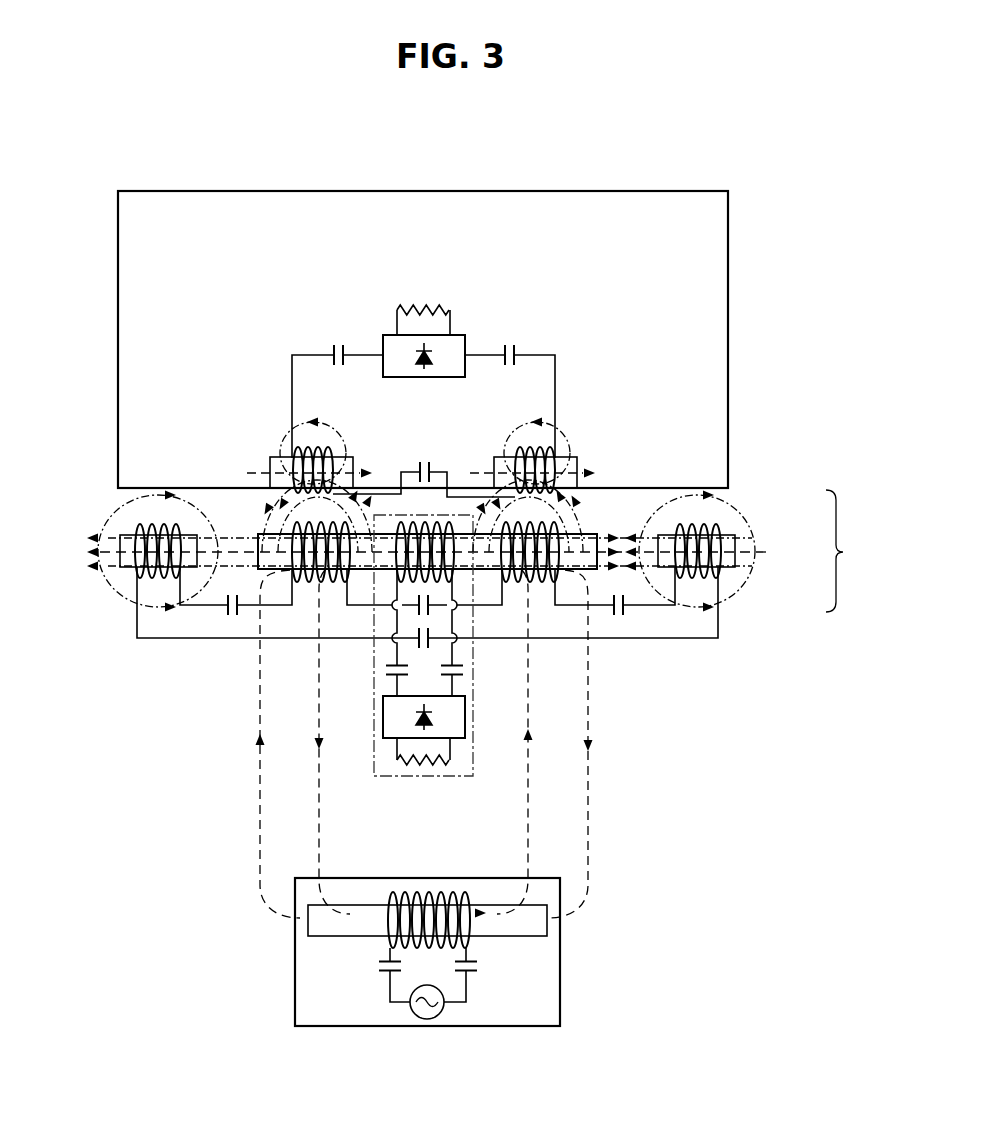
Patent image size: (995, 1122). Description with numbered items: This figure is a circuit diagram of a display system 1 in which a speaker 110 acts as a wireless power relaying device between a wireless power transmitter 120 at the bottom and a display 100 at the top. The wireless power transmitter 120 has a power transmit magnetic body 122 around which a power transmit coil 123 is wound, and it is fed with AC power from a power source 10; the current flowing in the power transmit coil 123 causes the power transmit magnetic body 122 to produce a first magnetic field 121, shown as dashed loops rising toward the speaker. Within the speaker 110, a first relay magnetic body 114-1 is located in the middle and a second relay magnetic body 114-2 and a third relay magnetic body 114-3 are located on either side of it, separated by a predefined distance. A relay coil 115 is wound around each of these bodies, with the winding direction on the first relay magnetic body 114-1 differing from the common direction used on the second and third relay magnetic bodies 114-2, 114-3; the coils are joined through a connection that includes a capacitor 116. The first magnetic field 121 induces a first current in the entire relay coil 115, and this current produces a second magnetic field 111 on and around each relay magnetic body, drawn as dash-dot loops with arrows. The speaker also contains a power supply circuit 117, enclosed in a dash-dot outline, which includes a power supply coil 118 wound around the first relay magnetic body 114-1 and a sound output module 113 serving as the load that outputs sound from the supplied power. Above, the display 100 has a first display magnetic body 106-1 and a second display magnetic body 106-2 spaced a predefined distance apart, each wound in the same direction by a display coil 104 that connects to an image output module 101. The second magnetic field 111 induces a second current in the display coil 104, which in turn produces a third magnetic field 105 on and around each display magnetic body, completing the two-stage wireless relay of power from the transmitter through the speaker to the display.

The display system 1 is at (697, 153).
The power source 10 is at (444, 1008).
The display 100 is at (118, 383).
The image output module 101 is at (423, 307).
The display coil 104 is at (555, 360).
The third magnetic field 105 is at (283, 441).
The first display magnetic body 106-1 is at (270, 466).
The second display magnetic body 106-2 is at (577, 466).
The speaker 110 is at (453, 655).
The second magnetic field 111 is at (108, 512).
The sound output module 113 is at (425, 766).
The first relay magnetic body 114-1 is at (565, 570).
The second relay magnetic body 114-2 is at (135, 570).
The third relay magnetic body 114-3 is at (718, 570).
The relay coil 115 is at (160, 640).
The capacitor 116 is at (228, 617).
The power supply circuit 117 is at (386, 778).
The power supply coil 118 is at (388, 669).
The wireless power transmitter 120 is at (295, 967).
The first magnetic field 121 is at (527, 822).
The power transmit magnetic body 122 is at (547, 930).
The power transmit coil 123 is at (470, 948).